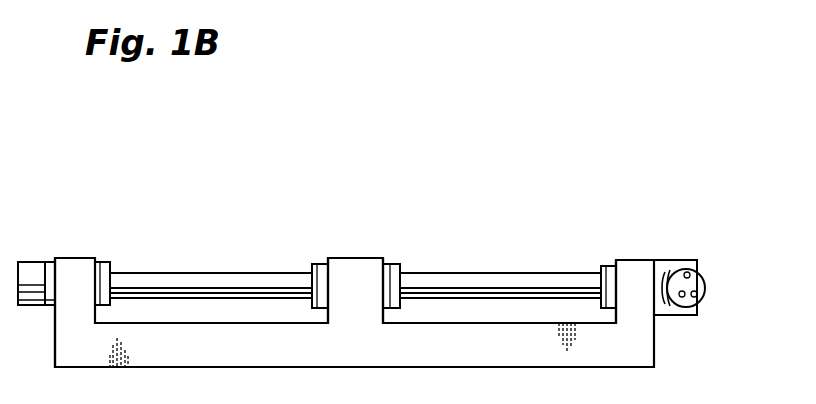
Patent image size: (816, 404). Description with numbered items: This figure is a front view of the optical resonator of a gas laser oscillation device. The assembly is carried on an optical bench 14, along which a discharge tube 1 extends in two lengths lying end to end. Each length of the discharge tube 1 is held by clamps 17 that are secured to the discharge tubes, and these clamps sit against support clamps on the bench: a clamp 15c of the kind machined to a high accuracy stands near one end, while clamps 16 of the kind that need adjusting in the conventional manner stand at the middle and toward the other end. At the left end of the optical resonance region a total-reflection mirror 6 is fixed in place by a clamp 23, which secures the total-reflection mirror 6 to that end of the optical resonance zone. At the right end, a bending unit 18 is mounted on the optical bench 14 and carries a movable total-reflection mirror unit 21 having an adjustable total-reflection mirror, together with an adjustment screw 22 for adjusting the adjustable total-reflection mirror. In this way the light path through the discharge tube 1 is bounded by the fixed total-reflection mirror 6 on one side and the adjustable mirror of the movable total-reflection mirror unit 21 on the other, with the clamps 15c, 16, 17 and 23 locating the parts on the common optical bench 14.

The discharge tube 1 is at (208, 273).
The total-reflection mirror 6 is at (21, 262).
The optical bench 14 is at (637, 352).
The clamp 15c is at (97, 262).
The clamps 16 is at (387, 264).
The clamps 17 is at (110, 262).
The bending unit 18 is at (661, 262).
The movable total-reflection mirror unit 21 is at (692, 283).
The adjustment screw 22 is at (697, 312).
The clamp 23 is at (50, 268).